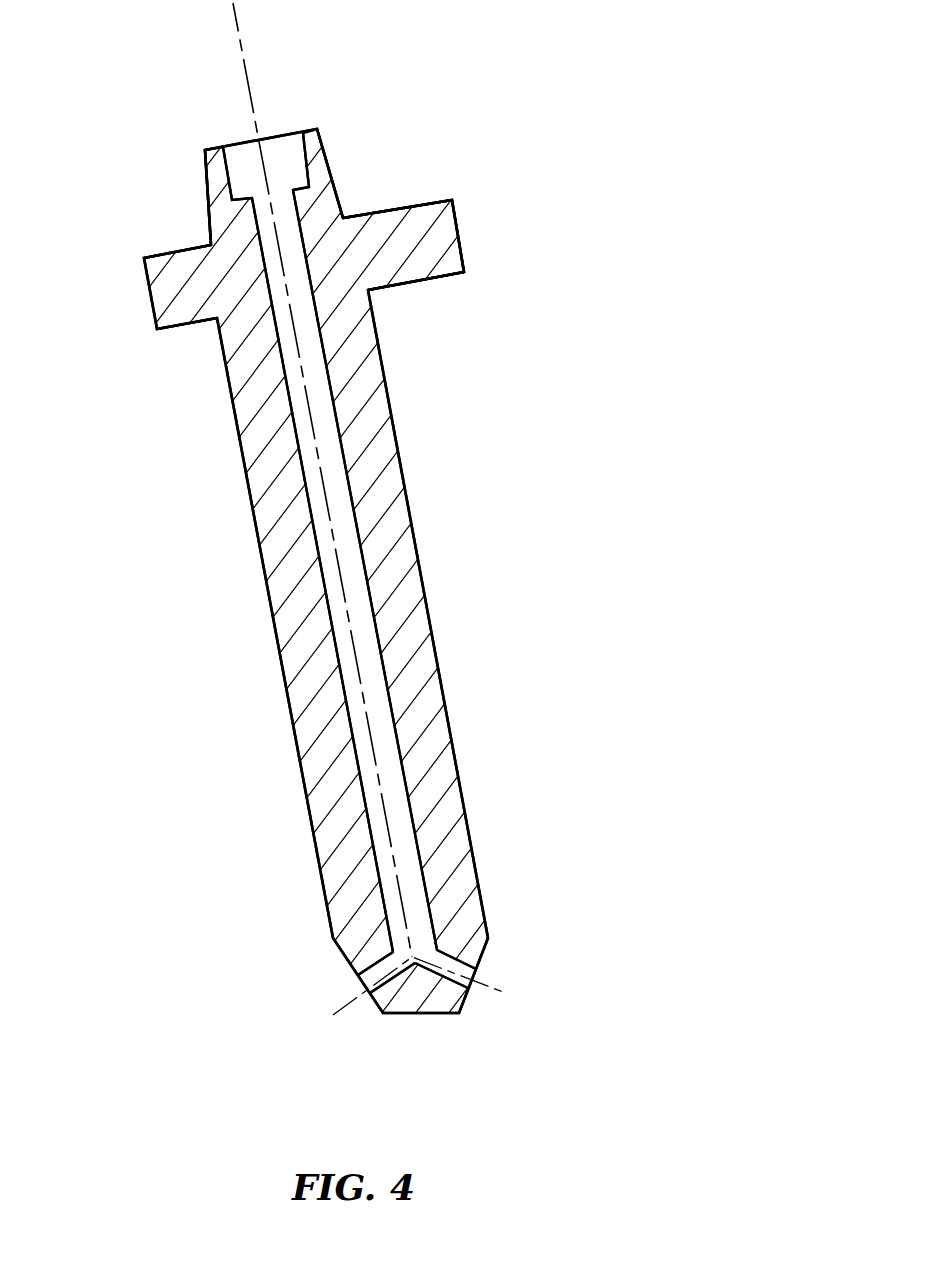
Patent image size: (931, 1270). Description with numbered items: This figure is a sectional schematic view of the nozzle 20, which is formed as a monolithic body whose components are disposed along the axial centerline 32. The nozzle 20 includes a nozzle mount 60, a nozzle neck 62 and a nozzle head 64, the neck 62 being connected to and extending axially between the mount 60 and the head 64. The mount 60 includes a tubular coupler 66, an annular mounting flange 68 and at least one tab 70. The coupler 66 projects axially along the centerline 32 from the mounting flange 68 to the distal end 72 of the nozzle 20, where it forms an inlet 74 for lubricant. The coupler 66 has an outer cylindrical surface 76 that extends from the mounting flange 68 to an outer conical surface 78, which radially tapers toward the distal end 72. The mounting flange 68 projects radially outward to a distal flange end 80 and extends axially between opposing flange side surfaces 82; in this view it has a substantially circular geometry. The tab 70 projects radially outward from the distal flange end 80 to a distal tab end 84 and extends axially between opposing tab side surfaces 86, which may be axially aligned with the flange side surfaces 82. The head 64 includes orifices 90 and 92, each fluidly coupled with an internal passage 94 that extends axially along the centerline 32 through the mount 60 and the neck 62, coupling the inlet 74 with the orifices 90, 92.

The nozzle 20 is at (558, 192).
The axial centerline 32 is at (241, 32).
The nozzle mount 60 is at (381, 152).
The nozzle neck 62 is at (446, 562).
The nozzle head 64 is at (418, 1033).
The tubular coupler 66 is at (202, 203).
The annular mounting flange 68 is at (403, 285).
The tab 70 is at (463, 275).
The distal end 72 is at (312, 129).
The inlet 74 is at (242, 161).
The outer cylindrical surface 76 is at (343, 200).
The outer conical surface 78 is at (327, 155).
The distal flange end 80 is at (148, 293).
The flange side surfaces 82 is at (157, 250).
The distal tab end 84 is at (462, 235).
The tab side surfaces 86 is at (443, 195).
The orifice 90 is at (367, 990).
The orifice 92 is at (473, 975).
The internal passage 94 is at (380, 728).